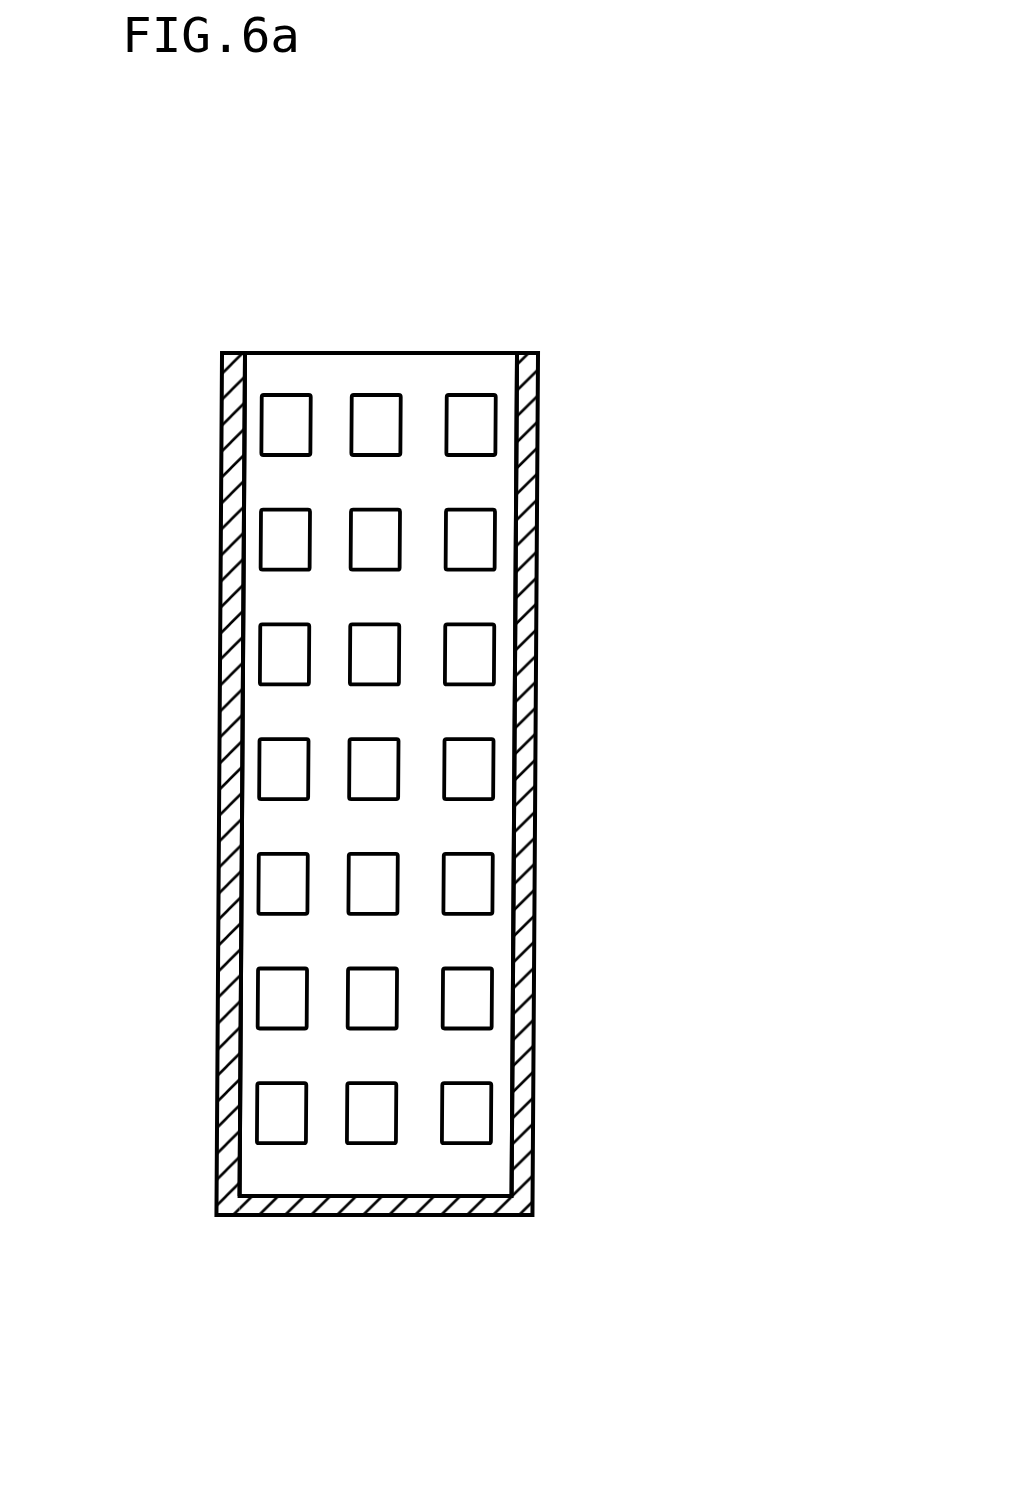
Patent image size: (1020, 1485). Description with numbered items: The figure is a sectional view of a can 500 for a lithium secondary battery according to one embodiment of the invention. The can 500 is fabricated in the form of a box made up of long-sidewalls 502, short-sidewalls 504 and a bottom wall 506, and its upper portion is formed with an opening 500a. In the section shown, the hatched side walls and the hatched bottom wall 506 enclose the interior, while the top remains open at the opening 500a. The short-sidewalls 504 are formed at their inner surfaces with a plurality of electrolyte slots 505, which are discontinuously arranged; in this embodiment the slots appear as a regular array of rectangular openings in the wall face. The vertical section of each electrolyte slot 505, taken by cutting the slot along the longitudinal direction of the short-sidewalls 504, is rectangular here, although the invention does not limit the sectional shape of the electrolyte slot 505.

The can 500 is at (628, 248).
The opening 500a is at (275, 352).
The long-sidewalls 502 is at (538, 589).
The short-sidewalls 504 is at (353, 367).
The electrolyte slot 505 is at (470, 413).
The bottom wall 506 is at (360, 1213).